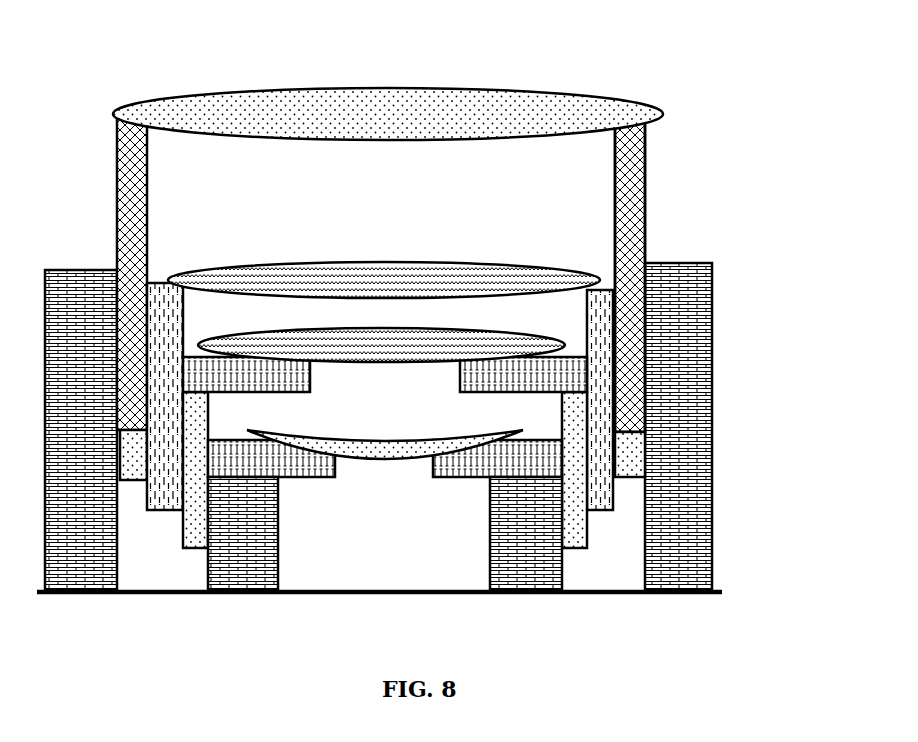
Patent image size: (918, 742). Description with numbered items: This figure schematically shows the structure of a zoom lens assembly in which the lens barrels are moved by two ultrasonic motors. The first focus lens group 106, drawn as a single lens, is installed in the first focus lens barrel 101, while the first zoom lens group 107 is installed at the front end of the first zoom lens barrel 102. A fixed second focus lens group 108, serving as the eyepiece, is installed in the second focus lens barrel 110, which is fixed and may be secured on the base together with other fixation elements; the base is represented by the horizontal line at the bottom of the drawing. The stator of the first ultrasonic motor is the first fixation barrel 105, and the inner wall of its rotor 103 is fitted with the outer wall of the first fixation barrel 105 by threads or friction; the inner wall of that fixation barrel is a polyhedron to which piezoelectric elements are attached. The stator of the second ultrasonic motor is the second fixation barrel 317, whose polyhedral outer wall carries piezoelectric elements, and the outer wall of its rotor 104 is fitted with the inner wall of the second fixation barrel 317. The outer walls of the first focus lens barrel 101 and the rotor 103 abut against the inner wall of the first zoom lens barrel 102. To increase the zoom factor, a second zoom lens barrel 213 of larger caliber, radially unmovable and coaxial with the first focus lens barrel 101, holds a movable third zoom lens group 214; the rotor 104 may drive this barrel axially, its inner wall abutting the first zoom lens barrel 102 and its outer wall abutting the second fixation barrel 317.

The first focus lens barrel 101 is at (570, 368).
The first zoom lens barrel 102 is at (628, 255).
The rotor of the first ultrasonic motor 103 is at (577, 458).
The rotor of the second ultrasonic motor 104 is at (637, 452).
The first fixation barrel 105 is at (213, 596).
The first focus lens group 106 is at (460, 345).
The first zoom lens group 107 is at (367, 267).
The second focus lens group 108 is at (385, 450).
The second focus lens barrel 110 is at (483, 478).
The second zoom lens barrel 213 is at (645, 147).
The third zoom lens group 214 is at (253, 113).
The second fixation barrel 317 is at (640, 592).